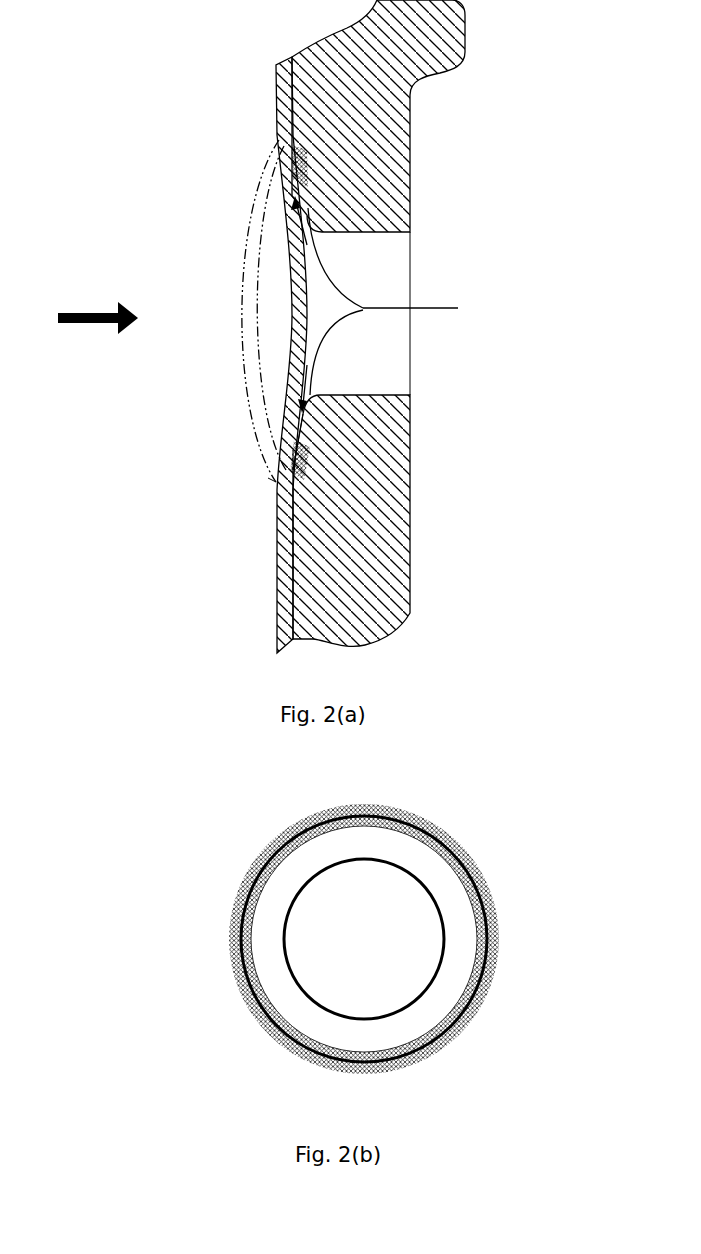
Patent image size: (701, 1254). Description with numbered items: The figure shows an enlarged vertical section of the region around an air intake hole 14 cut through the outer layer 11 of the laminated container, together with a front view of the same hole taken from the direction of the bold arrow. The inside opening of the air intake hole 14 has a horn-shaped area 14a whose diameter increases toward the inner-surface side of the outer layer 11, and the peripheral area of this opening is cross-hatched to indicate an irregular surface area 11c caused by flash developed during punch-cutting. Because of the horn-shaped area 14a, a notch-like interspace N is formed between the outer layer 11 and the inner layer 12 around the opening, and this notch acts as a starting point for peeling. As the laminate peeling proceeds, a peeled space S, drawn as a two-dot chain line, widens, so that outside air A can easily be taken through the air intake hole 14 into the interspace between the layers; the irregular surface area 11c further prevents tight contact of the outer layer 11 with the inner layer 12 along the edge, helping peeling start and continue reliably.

In FIG. 2A, the outer layer 11 is at (375, 177).
In FIG. 2A, the irregular surface area 11c is at (297, 165).
In FIG. 2B, the irregular surface area 11c is at (412, 817).
In FIG. 2A, the inner layer 12 is at (245, 243).
In FIG. 2A, the air intake hole 14 is at (375, 233).
In FIG. 2B, the air intake hole 14 is at (390, 953).
In FIG. 2A, the horn-shaped area 14a is at (300, 432).
In FIG. 2B, the horn-shaped area 14a is at (453, 911).
In FIG. 2A, the outside air A is at (330, 333).
In FIG. 2A, the notch-like interspace N is at (292, 452).
In FIG. 2A, the peeled space S is at (268, 478).